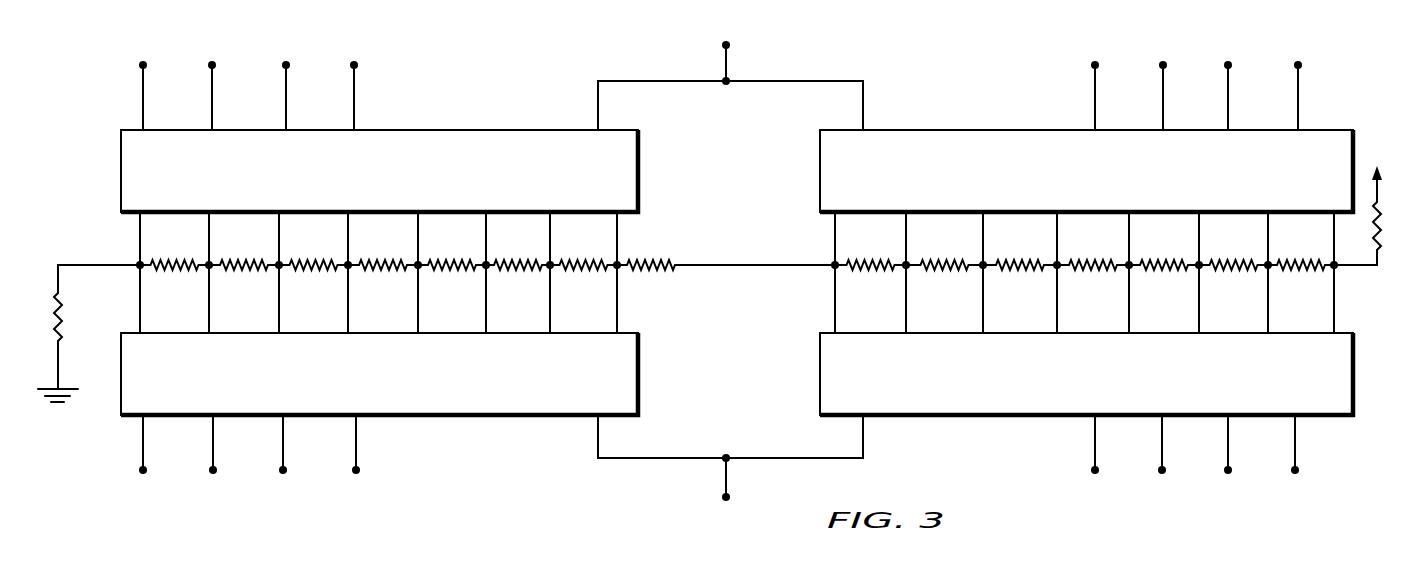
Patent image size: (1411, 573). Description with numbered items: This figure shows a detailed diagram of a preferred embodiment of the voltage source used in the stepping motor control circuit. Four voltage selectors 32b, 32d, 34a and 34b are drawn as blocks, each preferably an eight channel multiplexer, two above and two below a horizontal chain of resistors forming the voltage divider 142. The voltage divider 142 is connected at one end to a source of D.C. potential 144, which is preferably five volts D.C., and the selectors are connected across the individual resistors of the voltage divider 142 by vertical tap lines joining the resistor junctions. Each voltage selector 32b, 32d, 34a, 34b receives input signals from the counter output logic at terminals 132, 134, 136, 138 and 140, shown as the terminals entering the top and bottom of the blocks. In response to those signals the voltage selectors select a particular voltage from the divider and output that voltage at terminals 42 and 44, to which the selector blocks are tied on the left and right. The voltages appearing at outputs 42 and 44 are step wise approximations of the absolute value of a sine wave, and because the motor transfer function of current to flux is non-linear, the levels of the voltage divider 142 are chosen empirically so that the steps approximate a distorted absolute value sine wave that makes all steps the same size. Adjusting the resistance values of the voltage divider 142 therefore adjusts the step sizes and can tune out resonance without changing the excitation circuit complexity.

The voltage selector 32b is at (905, 130).
The voltage selector 32d is at (412, 130).
The voltage selector 34a is at (995, 415).
The voltage selector 34b is at (525, 415).
The voltage selector output terminal 42 is at (728, 44).
The voltage selector output terminal 44 is at (728, 498).
The input terminal 132 is at (143, 64).
The input terminal 134 is at (212, 65).
The input terminal 136 is at (286, 65).
The input terminal 138 is at (354, 65).
The input terminal 140 is at (356, 470).
The voltage divider 142 is at (745, 265).
The source of D.C. potential 144 is at (1363, 202).